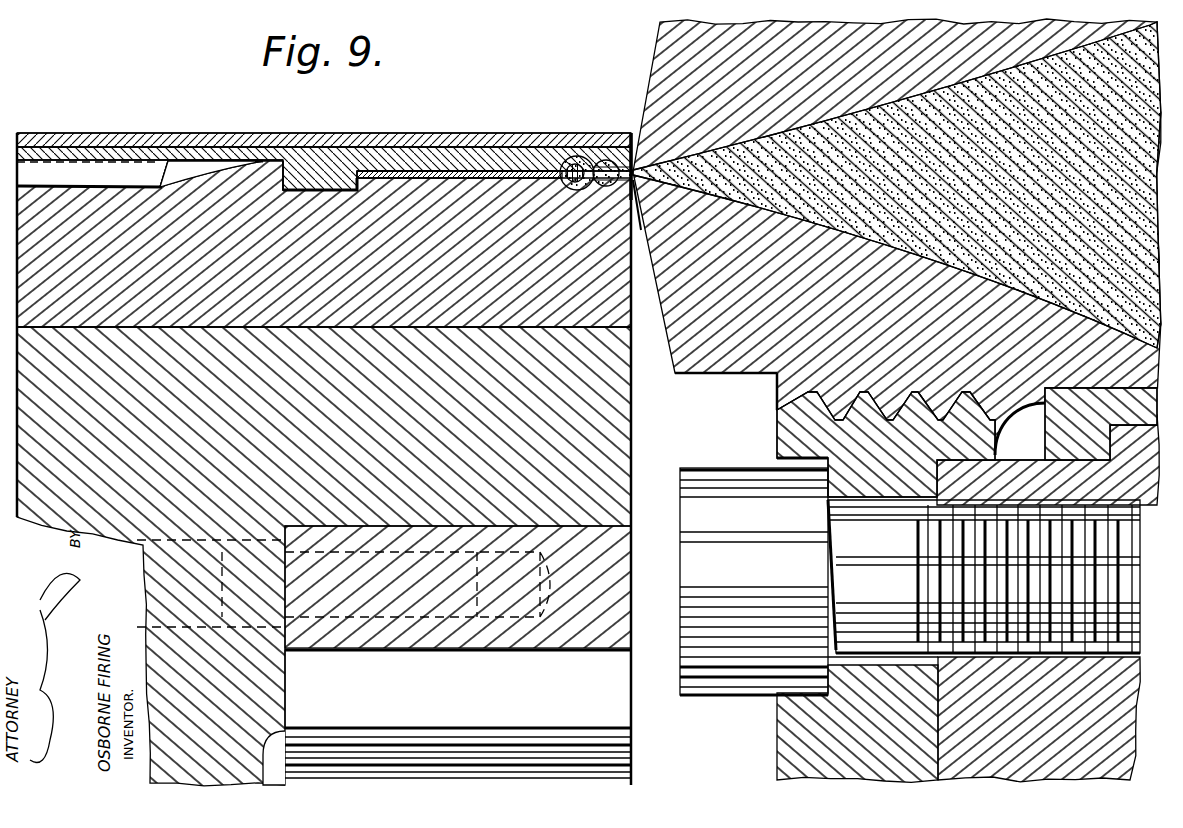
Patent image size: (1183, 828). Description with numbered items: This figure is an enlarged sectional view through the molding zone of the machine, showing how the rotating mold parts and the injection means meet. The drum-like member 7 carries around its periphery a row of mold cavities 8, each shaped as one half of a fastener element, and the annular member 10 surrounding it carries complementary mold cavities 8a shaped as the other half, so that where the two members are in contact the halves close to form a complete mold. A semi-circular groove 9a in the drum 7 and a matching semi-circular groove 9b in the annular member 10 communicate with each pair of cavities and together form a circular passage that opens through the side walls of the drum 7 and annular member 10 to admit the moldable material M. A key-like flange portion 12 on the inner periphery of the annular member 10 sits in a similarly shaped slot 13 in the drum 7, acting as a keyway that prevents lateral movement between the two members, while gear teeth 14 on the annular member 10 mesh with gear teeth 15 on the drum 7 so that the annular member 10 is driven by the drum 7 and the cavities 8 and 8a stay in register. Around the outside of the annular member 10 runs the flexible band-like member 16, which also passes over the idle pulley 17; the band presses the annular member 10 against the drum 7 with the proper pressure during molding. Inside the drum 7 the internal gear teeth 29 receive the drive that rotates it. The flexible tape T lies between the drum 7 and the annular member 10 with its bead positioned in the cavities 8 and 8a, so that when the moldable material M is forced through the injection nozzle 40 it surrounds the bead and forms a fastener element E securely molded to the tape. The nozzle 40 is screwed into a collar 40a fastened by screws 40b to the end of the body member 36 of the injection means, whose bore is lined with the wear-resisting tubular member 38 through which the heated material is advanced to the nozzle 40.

The drum-like member 7 is at (631, 385).
The mold cavities 8 is at (588, 165).
The mold cavities 8a is at (600, 163).
The semi-circular shaped grooves 9a is at (633, 245).
The semi-circular shaped grooves 9b is at (628, 160).
The annular member 10 is at (477, 155).
The key-like flange portion 12 is at (312, 172).
The slot 13 is at (346, 186).
The gear teeth 14 is at (97, 176).
The gear teeth 15 is at (192, 172).
The flexible band-like member 16 is at (305, 134).
The idle pulley 17 is at (631, 318).
The gear teeth 29 is at (605, 708).
The body member 36 is at (1105, 712).
The tubular member 38 is at (1045, 410).
The injection nozzle 40 is at (735, 350).
The collar 40a is at (802, 733).
The screws 40b is at (733, 660).
The fastener element E is at (562, 158).
The moldable material M is at (758, 165).
The flexible tape T is at (420, 176).